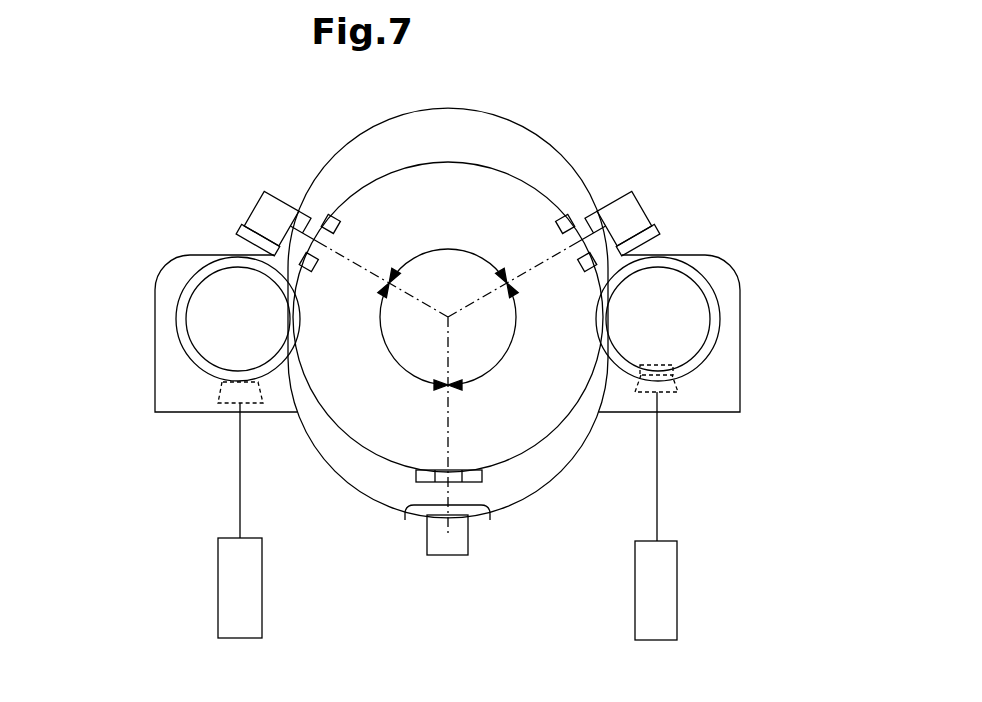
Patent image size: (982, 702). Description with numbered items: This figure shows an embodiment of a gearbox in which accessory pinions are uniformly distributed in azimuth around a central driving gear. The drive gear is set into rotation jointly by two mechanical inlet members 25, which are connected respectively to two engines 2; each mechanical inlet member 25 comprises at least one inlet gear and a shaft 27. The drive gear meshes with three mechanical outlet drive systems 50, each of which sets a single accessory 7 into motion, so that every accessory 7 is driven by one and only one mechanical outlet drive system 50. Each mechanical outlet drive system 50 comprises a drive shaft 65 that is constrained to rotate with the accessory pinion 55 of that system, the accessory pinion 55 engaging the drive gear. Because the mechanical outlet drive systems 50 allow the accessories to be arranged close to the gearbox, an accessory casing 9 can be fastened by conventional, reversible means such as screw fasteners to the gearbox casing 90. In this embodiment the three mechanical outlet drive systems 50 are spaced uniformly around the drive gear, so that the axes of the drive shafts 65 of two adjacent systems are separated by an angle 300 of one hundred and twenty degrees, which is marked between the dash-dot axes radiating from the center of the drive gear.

The engine 2 is at (218, 585).
The accessory 7 is at (437, 376).
The accessory casing 9 is at (265, 192).
The mechanical inlet member 25 is at (718, 356).
The shaft 27 is at (658, 463).
The mechanical outlet drive system 50 is at (314, 222).
The accessory pinion 55 is at (338, 226).
The drive shaft 65 is at (245, 206).
The gearbox casing 90 is at (737, 260).
The angle 300 is at (448, 381).